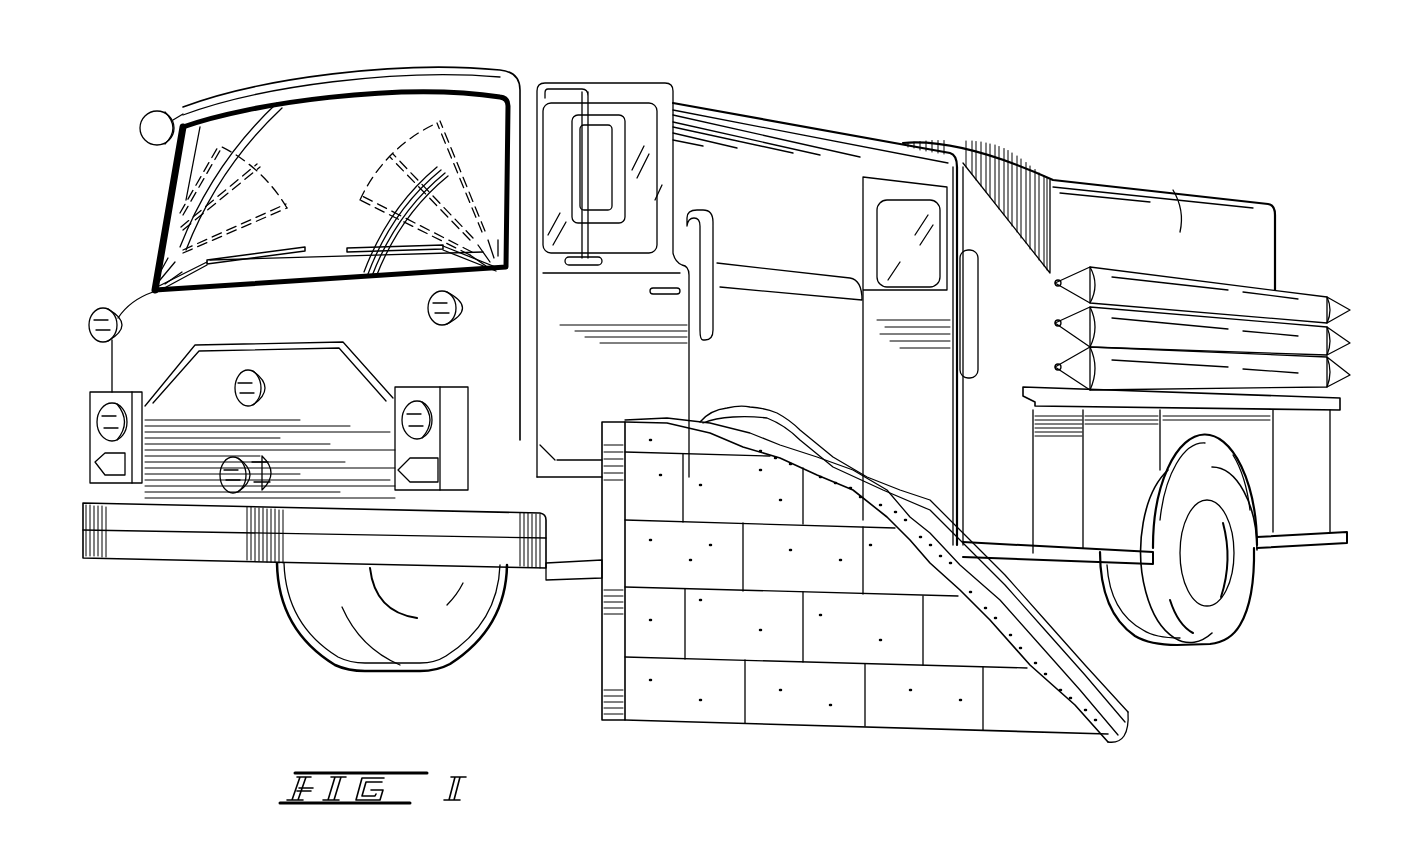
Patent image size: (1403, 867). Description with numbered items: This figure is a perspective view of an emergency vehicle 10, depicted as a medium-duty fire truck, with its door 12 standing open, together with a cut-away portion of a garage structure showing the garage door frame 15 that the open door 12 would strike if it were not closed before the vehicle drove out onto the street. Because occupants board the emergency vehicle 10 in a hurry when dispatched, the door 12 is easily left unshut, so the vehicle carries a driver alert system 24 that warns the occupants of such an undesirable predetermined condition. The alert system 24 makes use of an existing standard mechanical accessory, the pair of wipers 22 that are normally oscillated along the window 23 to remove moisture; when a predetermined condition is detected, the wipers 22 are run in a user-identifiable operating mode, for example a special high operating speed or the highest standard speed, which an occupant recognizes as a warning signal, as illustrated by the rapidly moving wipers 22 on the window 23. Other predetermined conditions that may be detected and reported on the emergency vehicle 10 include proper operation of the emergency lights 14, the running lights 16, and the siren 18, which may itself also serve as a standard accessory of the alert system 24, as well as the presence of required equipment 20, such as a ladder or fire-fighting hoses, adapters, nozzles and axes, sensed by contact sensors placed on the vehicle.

The emergency vehicle 10 is at (1073, 70).
The door 12 is at (663, 197).
The emergency lights 14 is at (434, 313).
The garage door frame 15 is at (707, 673).
The running lights 16 is at (408, 430).
The siren 18 is at (150, 128).
The equipment 20 is at (1297, 302).
The wipers 22 is at (358, 247).
The window 23 is at (317, 143).
The driver alert system 24 is at (375, 130).